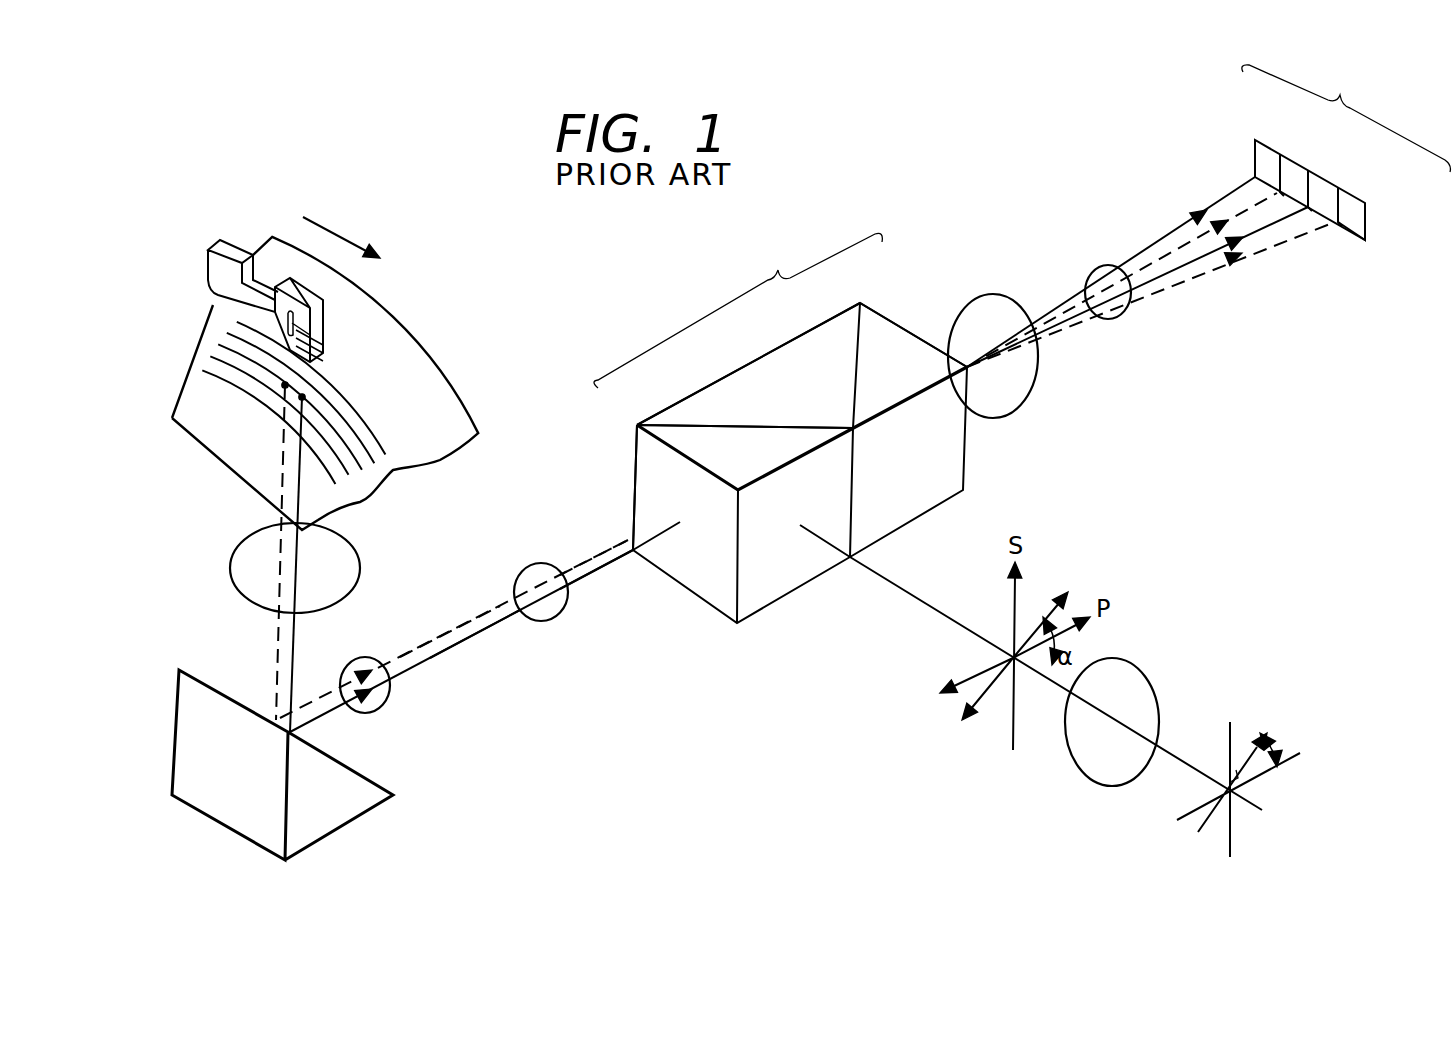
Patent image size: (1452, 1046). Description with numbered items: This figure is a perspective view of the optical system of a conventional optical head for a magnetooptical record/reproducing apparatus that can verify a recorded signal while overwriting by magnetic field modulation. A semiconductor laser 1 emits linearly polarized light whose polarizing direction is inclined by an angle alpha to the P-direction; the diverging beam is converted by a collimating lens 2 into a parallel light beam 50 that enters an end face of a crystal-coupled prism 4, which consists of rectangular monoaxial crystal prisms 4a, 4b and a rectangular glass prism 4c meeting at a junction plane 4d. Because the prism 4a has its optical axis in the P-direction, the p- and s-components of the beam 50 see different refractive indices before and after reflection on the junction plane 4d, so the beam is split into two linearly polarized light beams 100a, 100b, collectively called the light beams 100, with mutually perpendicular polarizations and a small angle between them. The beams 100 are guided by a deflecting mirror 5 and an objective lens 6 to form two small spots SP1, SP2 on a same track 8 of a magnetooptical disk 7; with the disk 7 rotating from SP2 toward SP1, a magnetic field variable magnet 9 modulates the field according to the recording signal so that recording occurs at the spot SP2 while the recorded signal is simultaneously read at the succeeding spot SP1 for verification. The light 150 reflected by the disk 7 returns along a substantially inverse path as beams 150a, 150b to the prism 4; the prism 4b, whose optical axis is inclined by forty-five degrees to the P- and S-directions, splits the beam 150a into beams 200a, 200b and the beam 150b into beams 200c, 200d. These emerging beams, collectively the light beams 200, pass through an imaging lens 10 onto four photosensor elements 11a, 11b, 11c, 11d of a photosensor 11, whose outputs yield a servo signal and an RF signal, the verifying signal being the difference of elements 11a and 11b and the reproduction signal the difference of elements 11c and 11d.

The semiconductor laser 1 is at (1270, 730).
The collimating lens 2 is at (1137, 690).
The crystal-coupled prism 4 is at (780, 428).
The rectangular monoaxial crystal prism 4a is at (660, 432).
The rectangular monoaxial crystal prism 4b is at (747, 373).
The rectangular glass prism 4c is at (877, 320).
The junction plane 4d is at (802, 423).
The deflecting mirror 5 is at (355, 800).
The objective lens 6 is at (243, 570).
The magnetooptical disk 7 is at (400, 350).
The track 8 is at (325, 415).
The magnetic field variable magnet 9 is at (228, 245).
The imaging lens 10 is at (993, 300).
The photosensor 11 is at (1346, 150).
The photosensor element 11a is at (1260, 138).
The photosensor element 11b is at (1333, 180).
The photosensor element 11c is at (1297, 160).
The photosensor element 11d is at (1367, 203).
The parallel light beam 50 is at (887, 587).
The light beams 100 is at (552, 620).
The linearly polarized light beam 100a is at (602, 570).
The linearly polarized light beam 100b is at (585, 567).
The reflected light 150 is at (387, 702).
The reflected light beam 150a is at (487, 633).
The reflected light beam 150b is at (425, 648).
The emerging light beams 200 is at (1113, 320).
The emerging light beam 200a is at (1227, 195).
The emerging light beam 200b is at (1185, 258).
The emerging light beam 200c is at (1222, 260).
The emerging light beam 200d is at (1190, 280).
The spot SP1 is at (285, 385).
The spot SP2 is at (302, 397).